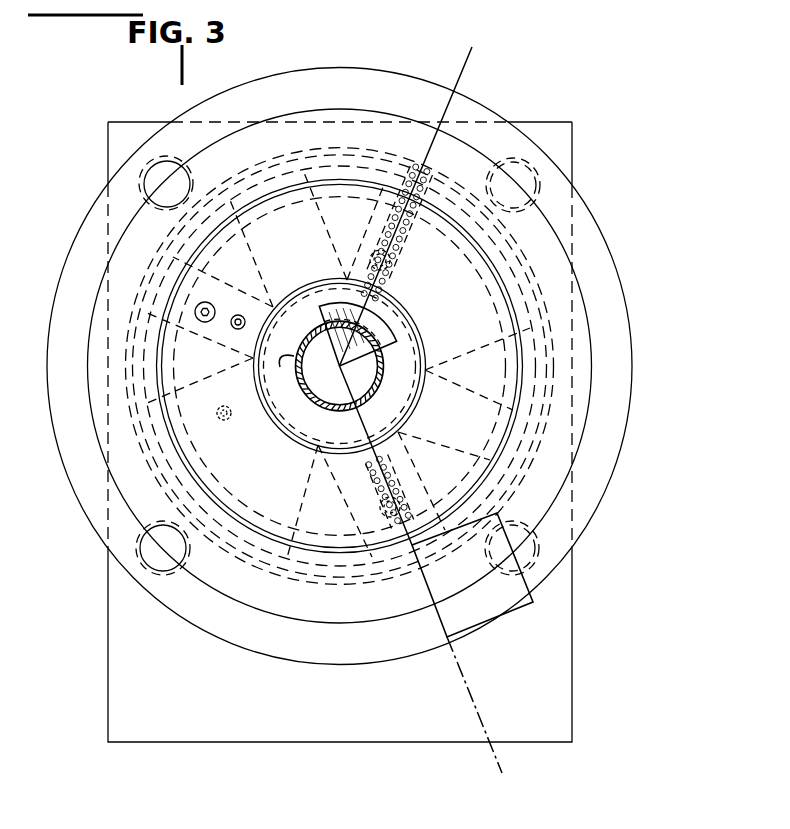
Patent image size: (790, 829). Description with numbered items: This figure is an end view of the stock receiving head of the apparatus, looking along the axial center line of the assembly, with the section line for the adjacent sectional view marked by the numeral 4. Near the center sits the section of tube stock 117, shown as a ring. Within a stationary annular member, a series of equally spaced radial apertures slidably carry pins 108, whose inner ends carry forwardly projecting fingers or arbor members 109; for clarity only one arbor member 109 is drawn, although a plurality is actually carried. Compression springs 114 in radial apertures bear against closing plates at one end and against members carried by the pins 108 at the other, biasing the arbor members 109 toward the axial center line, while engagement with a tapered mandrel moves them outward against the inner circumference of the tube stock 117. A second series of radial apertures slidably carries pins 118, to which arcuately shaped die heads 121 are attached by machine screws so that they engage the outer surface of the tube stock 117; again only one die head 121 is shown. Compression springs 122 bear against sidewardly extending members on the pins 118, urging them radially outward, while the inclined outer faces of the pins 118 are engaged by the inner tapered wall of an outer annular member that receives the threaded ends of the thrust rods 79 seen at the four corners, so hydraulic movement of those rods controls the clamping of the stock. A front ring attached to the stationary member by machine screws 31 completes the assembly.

The thrust rods 79 is at (135, 568).
The compression springs 114 is at (445, 176).
The pins 118 is at (441, 473).
The pin 108 is at (320, 521).
The arbor members 109 is at (369, 338).
The tube stock 117 is at (283, 373).
The die heads 121 is at (340, 366).
The compression springs 122 is at (420, 434).
The screws 31 is at (243, 322).
The section line 4- 4 is at (533, 773).